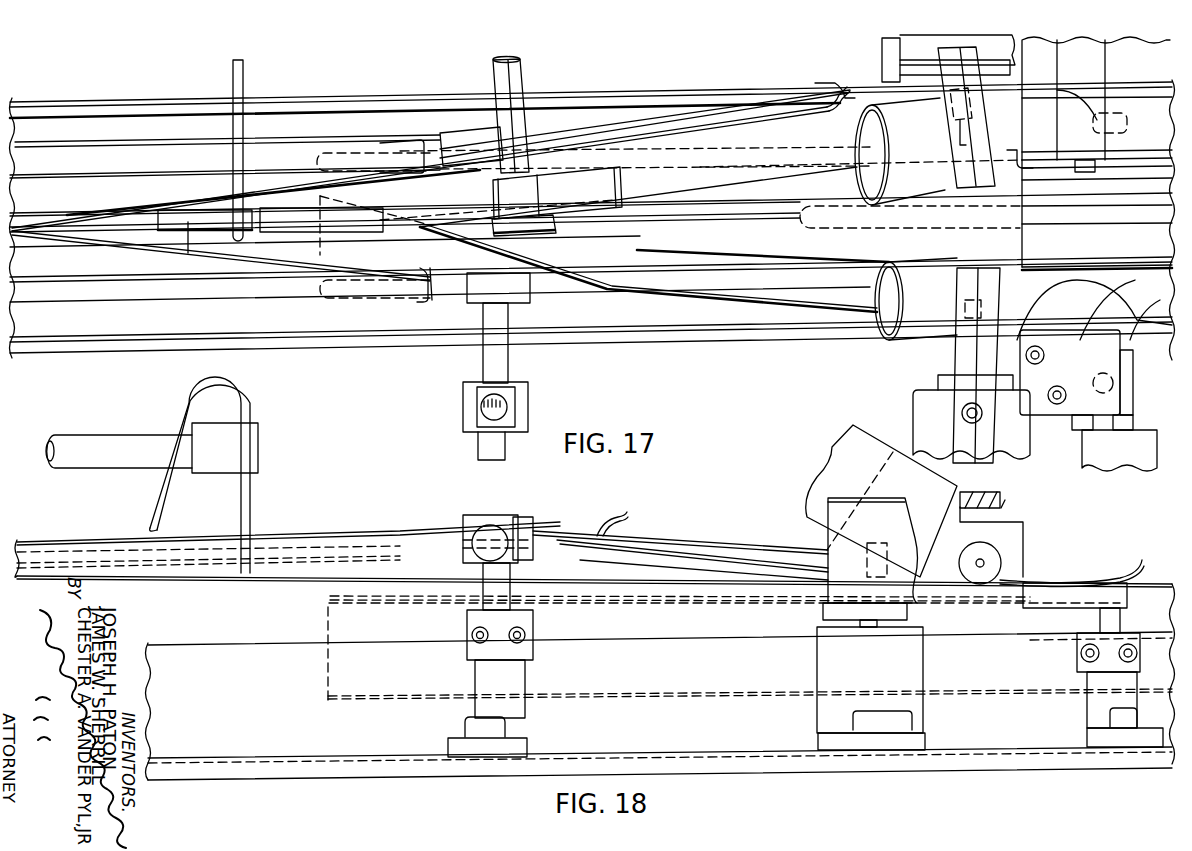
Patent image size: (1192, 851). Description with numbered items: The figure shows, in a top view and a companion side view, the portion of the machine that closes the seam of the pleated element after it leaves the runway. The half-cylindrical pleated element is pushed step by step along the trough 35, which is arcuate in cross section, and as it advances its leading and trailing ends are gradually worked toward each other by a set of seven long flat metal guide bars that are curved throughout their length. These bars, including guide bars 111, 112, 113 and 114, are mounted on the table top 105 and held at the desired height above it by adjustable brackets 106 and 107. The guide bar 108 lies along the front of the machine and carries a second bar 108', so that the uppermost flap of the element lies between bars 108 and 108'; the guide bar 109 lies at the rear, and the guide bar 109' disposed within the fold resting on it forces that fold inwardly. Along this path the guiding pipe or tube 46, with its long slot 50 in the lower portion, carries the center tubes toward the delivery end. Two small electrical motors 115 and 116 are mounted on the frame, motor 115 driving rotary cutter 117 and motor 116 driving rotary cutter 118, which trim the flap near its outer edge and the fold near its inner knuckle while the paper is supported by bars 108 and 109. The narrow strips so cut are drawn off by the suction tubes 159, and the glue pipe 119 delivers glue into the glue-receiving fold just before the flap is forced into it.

In FIG. 17, the trough 35 is at (163, 104).
In FIG. 18, the trough 35 is at (777, 713).
In FIG. 17, the guiding pipe or tube 46 is at (318, 252).
In FIG. 18, the guiding pipe or tube 46 is at (345, 613).
In FIG. 17, the slot 50 is at (1080, 213).
In FIG. 18, the table top 105 is at (765, 763).
In FIG. 17, the adjustable bracket 106 is at (468, 391).
In FIG. 18, the adjustable bracket 106 is at (500, 680).
In FIG. 17, the adjustable bracket 107 is at (514, 83).
In FIG. 18, the adjustable bracket 107 is at (1093, 708).
In FIG. 17, the guide bar 108 is at (796, 349).
In FIG. 18, the guide bar 108 is at (1088, 573).
In FIG. 17, the second bar 108' is at (1094, 323).
In FIG. 18, the second bar 108' is at (1105, 560).
In FIG. 17, the guide bar 109 is at (931, 178).
In FIG. 17, the guide bar 109' is at (1120, 125).
In FIG. 17, the guide bar 111 is at (556, 193).
In FIG. 17, the guide bar 112 is at (527, 262).
In FIG. 17, the guide bar 113 is at (210, 299).
In FIG. 17, the guide bar 114 is at (190, 150).
In FIG. 17, the electrical motor 115 is at (923, 50).
In FIG. 17, the electrical motor 116 is at (927, 408).
In FIG. 17, the rotary cutter 117 is at (968, 117).
In FIG. 17, the rotary cutter 118 is at (997, 281).
In FIG. 18, the rotary cutter 118 is at (1003, 550).
In FIG. 17, the glue pipe 119 is at (243, 76).
In FIG. 18, the glue pipe 119 is at (250, 405).
In FIG. 17, the suction tube 159 is at (877, 193).
In FIG. 18, the suction tube 159 is at (845, 467).